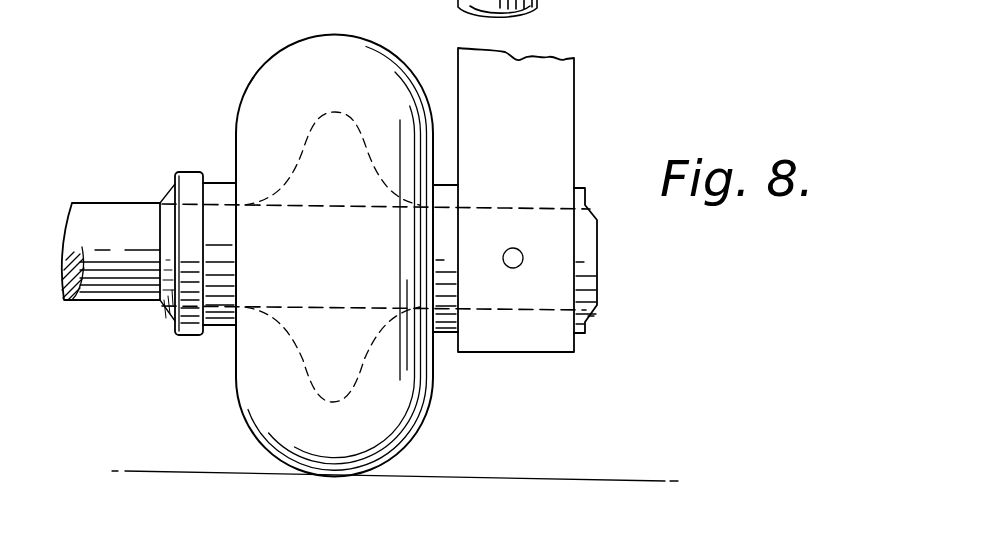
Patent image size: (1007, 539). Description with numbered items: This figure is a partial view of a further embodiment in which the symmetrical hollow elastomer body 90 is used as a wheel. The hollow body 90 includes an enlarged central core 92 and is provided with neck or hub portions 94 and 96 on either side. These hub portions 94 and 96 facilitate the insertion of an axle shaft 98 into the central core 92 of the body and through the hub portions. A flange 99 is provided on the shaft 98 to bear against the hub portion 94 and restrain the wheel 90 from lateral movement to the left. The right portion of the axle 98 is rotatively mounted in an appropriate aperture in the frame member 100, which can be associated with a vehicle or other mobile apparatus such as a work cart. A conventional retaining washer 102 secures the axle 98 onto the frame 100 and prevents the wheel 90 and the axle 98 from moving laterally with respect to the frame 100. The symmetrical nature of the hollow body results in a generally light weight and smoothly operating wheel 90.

The hollow body 90 is at (283, 60).
The central core 92 is at (332, 257).
The hub portion 94 is at (222, 182).
The hub portion 96 is at (446, 190).
The axle shaft 98 is at (105, 292).
The flange 99 is at (168, 200).
The frame member 100 is at (565, 108).
The retaining washer 102 is at (588, 333).